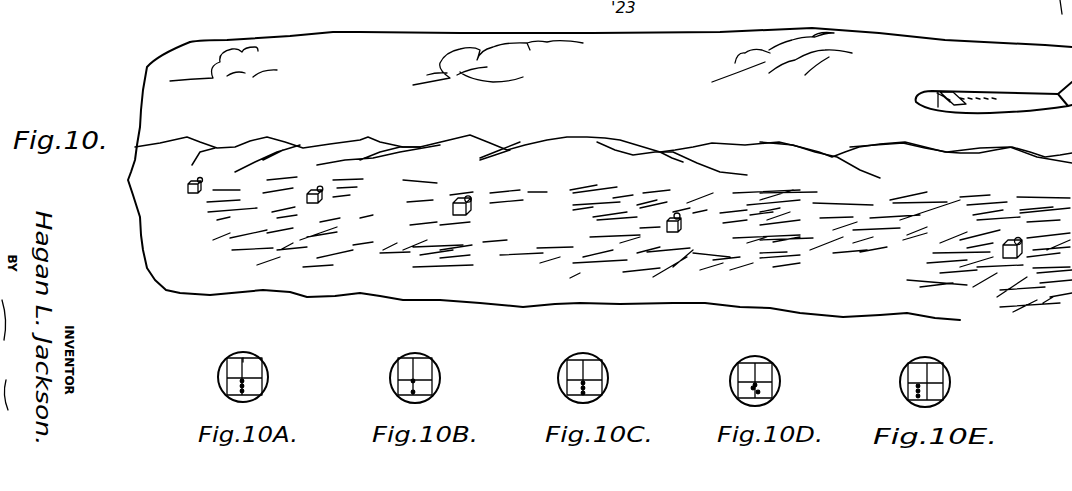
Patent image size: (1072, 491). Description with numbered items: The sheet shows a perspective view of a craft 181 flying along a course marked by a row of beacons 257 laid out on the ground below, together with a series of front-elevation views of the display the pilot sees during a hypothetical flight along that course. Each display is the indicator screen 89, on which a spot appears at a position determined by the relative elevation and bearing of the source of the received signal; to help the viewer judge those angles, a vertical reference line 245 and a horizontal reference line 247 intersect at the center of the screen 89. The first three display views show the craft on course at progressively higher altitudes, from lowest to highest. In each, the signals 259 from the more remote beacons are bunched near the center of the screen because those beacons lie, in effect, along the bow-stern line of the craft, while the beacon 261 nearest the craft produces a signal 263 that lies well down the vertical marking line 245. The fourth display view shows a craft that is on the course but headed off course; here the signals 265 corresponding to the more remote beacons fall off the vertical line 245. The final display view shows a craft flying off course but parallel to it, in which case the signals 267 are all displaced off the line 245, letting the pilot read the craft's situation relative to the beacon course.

In FIG. 10, the craft 181 is at (1013, 108).
In FIG. 10, the beacons 257 is at (466, 214).
In FIG. 10, the beacon nearest the craft 261 is at (680, 228).
In FIG. 10A, the screen 89 is at (268, 370).
In FIG. 10A, the vertical reference line 245 is at (243, 362).
In FIG. 10E, the vertical reference line 245 is at (943, 390).
In FIG. 10A, the signal from nearest beacon 263 is at (230, 392).
In FIG. 10D, the signal from nearest beacon 263 is at (772, 395).
In FIG. 10B, the horizontal reference line 247 is at (413, 382).
In FIG. 10D, the horizontal reference line 247 is at (755, 385).
In FIG. 10B, the signals from more remote beacons 259 is at (413, 383).
In FIG. 10D, the signals from more remote beacons when headed off course 265 is at (747, 387).
In FIG. 10E, the signals when flying off course 267 is at (918, 390).